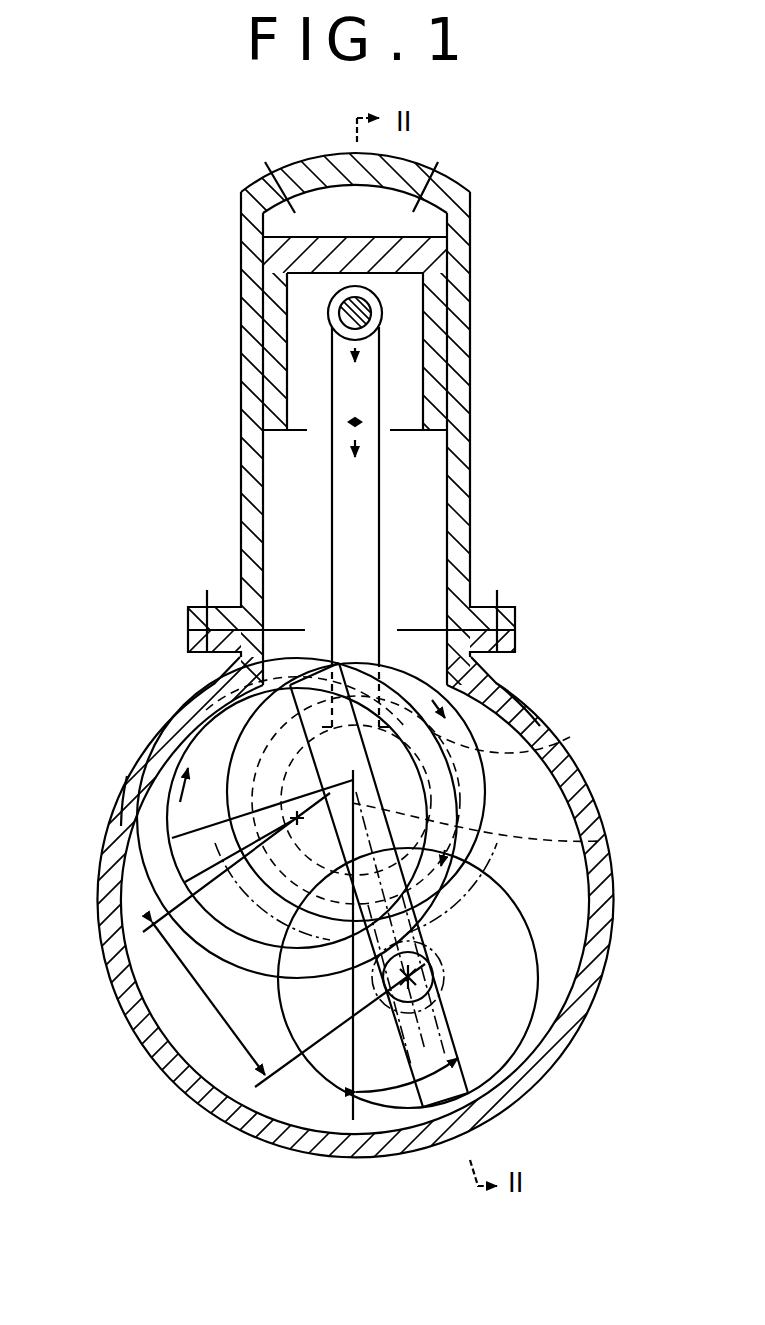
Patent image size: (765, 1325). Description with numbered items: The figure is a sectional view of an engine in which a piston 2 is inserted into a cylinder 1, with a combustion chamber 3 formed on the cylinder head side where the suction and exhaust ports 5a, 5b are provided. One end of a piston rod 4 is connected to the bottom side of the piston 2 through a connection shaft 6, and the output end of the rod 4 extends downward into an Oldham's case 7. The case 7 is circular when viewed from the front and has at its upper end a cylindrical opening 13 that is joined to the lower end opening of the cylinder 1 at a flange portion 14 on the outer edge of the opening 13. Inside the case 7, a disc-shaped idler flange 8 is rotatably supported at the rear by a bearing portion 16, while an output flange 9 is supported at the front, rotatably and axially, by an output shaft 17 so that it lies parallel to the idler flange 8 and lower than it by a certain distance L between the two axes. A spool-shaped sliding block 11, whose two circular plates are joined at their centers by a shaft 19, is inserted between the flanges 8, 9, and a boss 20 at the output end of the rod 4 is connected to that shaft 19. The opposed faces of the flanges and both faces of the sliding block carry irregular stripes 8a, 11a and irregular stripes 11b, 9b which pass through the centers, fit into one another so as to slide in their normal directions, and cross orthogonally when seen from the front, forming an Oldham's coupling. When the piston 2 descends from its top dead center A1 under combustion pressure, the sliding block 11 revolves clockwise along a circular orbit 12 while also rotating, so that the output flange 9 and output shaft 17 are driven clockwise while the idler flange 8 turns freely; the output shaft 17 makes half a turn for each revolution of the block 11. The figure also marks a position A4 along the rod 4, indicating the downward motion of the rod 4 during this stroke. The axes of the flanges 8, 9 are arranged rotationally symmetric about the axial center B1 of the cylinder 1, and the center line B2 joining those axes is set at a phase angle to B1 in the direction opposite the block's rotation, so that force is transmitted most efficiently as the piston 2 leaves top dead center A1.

The cylinder 1 is at (472, 235).
The piston 2 is at (272, 295).
The combustion chamber 3 is at (273, 223).
The piston rod 4 is at (368, 482).
The suction port 5a is at (265, 162).
The exhaust port 5b is at (438, 162).
The connection shaft 6 is at (368, 303).
The Oldham's case 7 is at (143, 1033).
The idler flange 8 is at (200, 740).
The irregular stripes 8a is at (297, 818).
The output flange 9 is at (433, 985).
The irregular stripes 9b is at (473, 1093).
The sliding block 11 is at (487, 791).
The irregular stripes 11a is at (563, 738).
The irregular stripes 11b is at (182, 685).
The circular orbit 12 is at (150, 962).
The cylindrical opening 13 is at (420, 650).
The flange portion 14 is at (515, 642).
The bearing portion 16 is at (140, 812).
The output shaft 17 is at (427, 997).
The shaft 19 is at (600, 841).
The boss 20 is at (530, 702).
The top dead center A1 is at (350, 315).
The connecting rod position A4 is at (360, 508).
The axial center of the cylinder B1 is at (353, 1117).
The center line B2 is at (530, 1087).
The distance L is at (288, 1004).